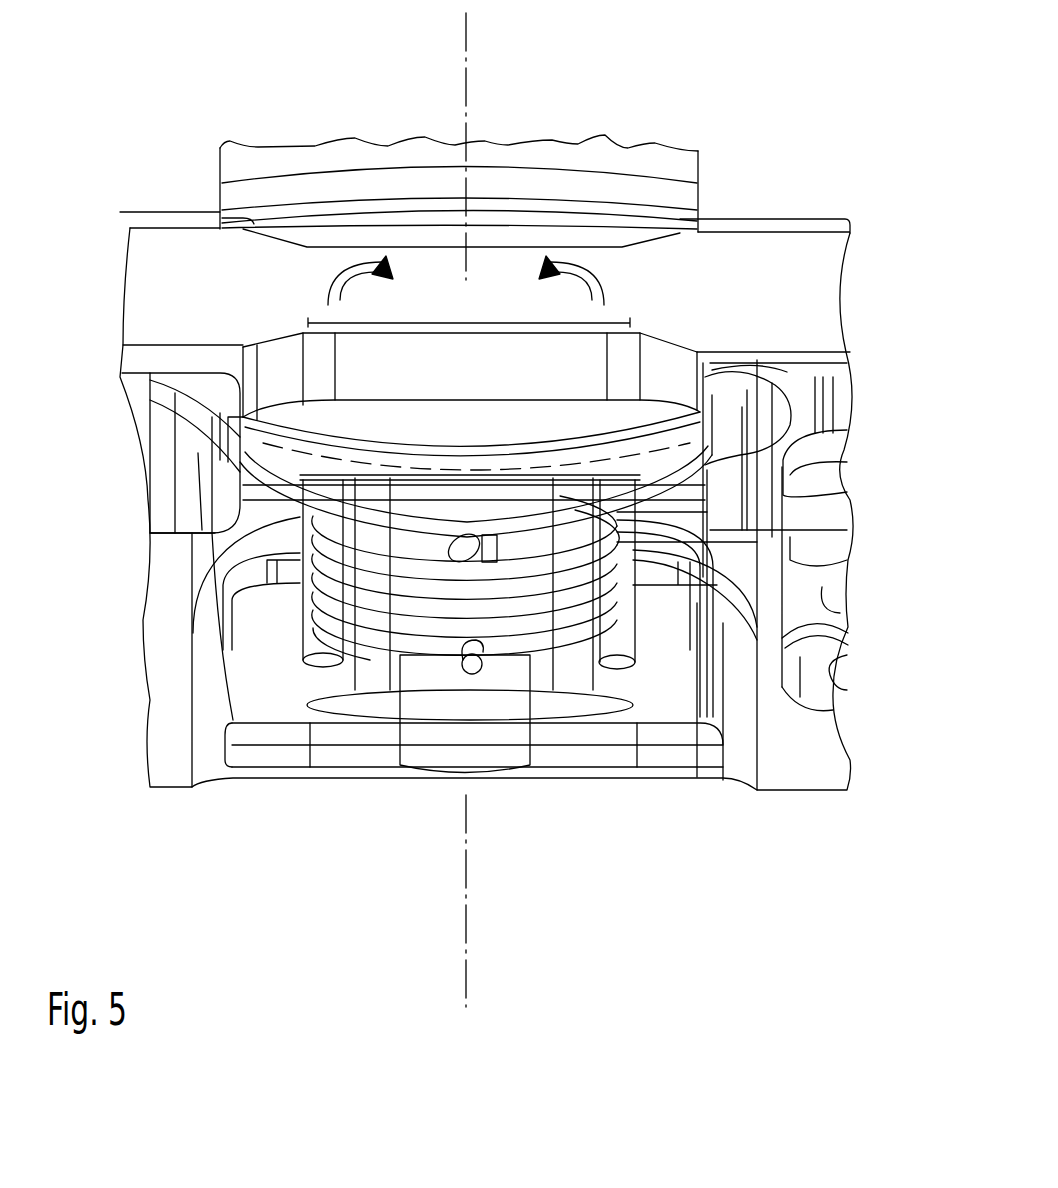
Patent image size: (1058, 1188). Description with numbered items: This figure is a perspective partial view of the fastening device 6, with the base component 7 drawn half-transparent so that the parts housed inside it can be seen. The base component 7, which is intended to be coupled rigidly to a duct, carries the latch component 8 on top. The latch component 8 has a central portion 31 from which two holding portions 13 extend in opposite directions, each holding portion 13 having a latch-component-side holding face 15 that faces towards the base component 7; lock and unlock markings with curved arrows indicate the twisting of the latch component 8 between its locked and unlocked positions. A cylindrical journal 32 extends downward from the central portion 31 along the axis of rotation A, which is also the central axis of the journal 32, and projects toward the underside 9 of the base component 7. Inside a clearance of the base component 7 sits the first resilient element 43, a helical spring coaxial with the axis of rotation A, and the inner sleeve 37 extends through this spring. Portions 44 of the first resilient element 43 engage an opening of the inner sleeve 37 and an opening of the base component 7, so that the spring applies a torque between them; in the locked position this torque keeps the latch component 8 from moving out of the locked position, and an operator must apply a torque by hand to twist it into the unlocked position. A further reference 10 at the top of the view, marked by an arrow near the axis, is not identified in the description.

The fastening device 6 is at (708, 79).
The base component 7 is at (168, 767).
The latch component 8 is at (432, 268).
The underside 9 is at (491, 810).
The direction of axis 10 is at (495, 114).
The holding portions 13 is at (181, 212).
The latch-component-side holding face 15 is at (128, 378).
The central portion 31 is at (490, 322).
The cylindrical journal 32 is at (517, 738).
The inner sleeve 37 is at (530, 543).
The first resilient element 43 is at (330, 605).
The portions of the first resilient element 44 is at (467, 552).
The axis of rotation A is at (466, 972).